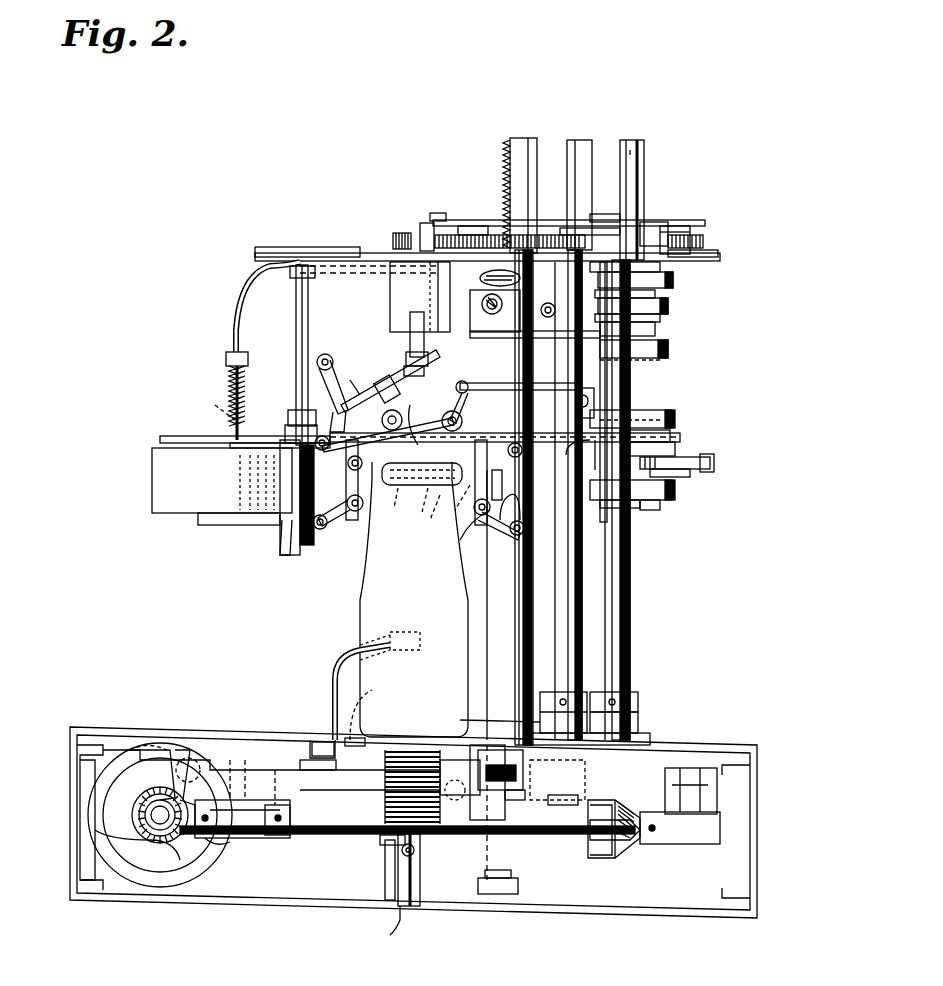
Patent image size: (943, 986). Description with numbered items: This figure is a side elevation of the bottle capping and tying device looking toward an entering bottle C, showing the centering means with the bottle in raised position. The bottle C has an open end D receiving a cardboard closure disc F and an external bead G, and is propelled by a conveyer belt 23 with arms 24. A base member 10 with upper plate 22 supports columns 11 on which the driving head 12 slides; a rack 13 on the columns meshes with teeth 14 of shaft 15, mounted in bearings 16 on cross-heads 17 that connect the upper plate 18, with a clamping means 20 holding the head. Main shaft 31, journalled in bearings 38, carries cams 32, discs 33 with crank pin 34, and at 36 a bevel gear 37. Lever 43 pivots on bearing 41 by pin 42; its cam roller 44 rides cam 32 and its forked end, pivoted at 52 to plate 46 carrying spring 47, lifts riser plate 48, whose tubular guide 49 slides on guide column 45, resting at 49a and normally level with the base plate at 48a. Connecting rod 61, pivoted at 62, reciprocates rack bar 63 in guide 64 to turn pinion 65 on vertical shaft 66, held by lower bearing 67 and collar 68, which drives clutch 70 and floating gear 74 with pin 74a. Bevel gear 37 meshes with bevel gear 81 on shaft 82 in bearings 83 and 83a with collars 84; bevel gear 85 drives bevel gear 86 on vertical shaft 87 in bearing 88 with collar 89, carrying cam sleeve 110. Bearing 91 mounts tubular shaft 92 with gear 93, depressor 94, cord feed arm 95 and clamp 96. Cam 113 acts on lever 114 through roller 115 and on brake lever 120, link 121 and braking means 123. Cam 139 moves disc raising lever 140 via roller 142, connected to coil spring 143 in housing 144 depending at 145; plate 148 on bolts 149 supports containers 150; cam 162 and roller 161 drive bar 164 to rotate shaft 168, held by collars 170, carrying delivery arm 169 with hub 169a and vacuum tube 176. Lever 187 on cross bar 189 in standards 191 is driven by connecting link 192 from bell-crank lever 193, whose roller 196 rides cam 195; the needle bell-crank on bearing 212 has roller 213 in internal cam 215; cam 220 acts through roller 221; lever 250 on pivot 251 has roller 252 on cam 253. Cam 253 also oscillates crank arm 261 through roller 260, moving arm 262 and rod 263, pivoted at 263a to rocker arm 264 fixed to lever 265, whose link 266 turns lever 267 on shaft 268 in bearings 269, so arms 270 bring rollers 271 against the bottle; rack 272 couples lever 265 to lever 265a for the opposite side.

The base member 10 is at (757, 797).
The column 11 is at (534, 584).
The driving head mechanism 12 is at (704, 216).
The rack 13 is at (510, 156).
The teeth 14 is at (484, 324).
The shaft 15 is at (482, 304).
The bearing 16 is at (486, 280).
The cross-head 17 is at (488, 340).
The upper plate 18 is at (348, 253).
The locking or clamping means 20 is at (549, 303).
The upper plate 22 is at (250, 730).
The conveyer belt 23 is at (316, 742).
The arm 24 is at (340, 648).
The rotatable shaft 31 is at (155, 830).
The cam 32 is at (108, 812).
The disc 33 is at (108, 858).
The crank pin 34 is at (195, 740).
The mounting of bevel gear 36 is at (118, 856).
The bevel gear 37 is at (165, 840).
The bearing 38 is at (140, 750).
The bearing 41 is at (300, 760).
The pin 42 is at (248, 838).
The lever 43 is at (310, 834).
The cam roller 44 is at (215, 848).
The guide column 45 is at (386, 882).
The plate 46 is at (424, 845).
The compression spring 47 is at (380, 806).
The riser plate 48 is at (362, 726).
The level position of riser plate 48a is at (355, 738).
The tubular guide 49 is at (420, 877).
The resting position of guide 49a is at (390, 932).
The pivot 52 is at (418, 858).
The connecting rod 61 is at (295, 790).
The pivot 62 is at (445, 790).
The rack bar 63 is at (486, 790).
The guide 64 is at (522, 800).
The pinion 65 is at (578, 805).
The vertical shaft 66 is at (582, 598).
The lower bearing 67 is at (460, 720).
The collar 68 is at (548, 692).
The disc clutch 70 is at (640, 222).
The floating gear 74 is at (460, 235).
The pin 74a is at (488, 226).
The bevel gear 81 is at (175, 845).
The shaft 82 is at (490, 834).
The bearing 83 is at (245, 838).
The bearing 83a is at (680, 846).
The collar 84 is at (280, 838).
The bevel gear 85 is at (625, 846).
The bevel gear 86 is at (598, 838).
The vertical shaft 87 is at (632, 612).
The bearing 88 is at (638, 720).
The collar 89 is at (638, 700).
The anti-friction bearing 91 is at (390, 295).
The tubular shaft 92 is at (416, 340).
The gear 93 is at (393, 238).
The closure depressor 94 is at (378, 380).
The cord feed arm 95 is at (410, 356).
The clamp 96 is at (410, 370).
The cam sleeve 110 is at (645, 382).
The cam 113 is at (680, 240).
The lever 114 is at (590, 232).
The roller 115 is at (605, 222).
The brake lever 120 is at (670, 226).
The link 121 is at (462, 220).
The braking means 123 is at (420, 235).
The cam 139 is at (668, 308).
The disc raising lever 140 is at (660, 320).
The cam roller bearing 142 is at (655, 295).
The coil spring 143 is at (228, 376).
The tubular housing 144 is at (360, 252).
The downward extension of housing 145 is at (236, 308).
The plate 148 is at (215, 525).
The bolt 149 is at (236, 404).
The container 150 is at (152, 470).
The cam roller bearing 161 is at (660, 268).
The cam 162 is at (673, 282).
The bar 164 is at (310, 247).
The shaft 168 is at (296, 312).
The paper disc delivery arm 169 is at (160, 436).
The hub portion 169a is at (296, 540).
The collar 170 is at (292, 278).
The vacuum tube 176 is at (285, 430).
The lever 187 is at (330, 380).
The cross bar 189 is at (318, 358).
The standard 191 is at (326, 386).
The connecting link 192 is at (356, 372).
The bell-crank lever 193 is at (655, 332).
The cam 195 is at (668, 350).
The roller bearing 196 is at (660, 365).
The bearing 212 is at (660, 510).
The roller bearing 213 is at (660, 508).
The internal cam 215 is at (675, 490).
The cam 220 is at (672, 415).
The roller bearing 221 is at (675, 422).
The lever 250 is at (714, 464).
The pivot 251 is at (690, 476).
The roller bearing 252 is at (685, 455).
The cam 253 is at (690, 438).
The roller bearing 260 is at (588, 470).
The crank arm 261 is at (572, 480).
The oscillating arm 262 is at (594, 396).
The rod 263 is at (500, 382).
The pivot 263a is at (478, 370).
The rocker arm 264 is at (436, 440).
The lever 265 is at (488, 460).
The lever 265a is at (360, 436).
The link 266 is at (522, 508).
The lever 267 is at (470, 535).
The shaft 268 is at (482, 520).
The bearing 269 is at (488, 482).
The arm 270 is at (448, 505).
The roller 271 is at (455, 480).
The rack 272 is at (412, 443).
The bottle C is at (414, 599).
The open end D is at (422, 507).
The spout E' is at (417, 484).
The cardboard closure disc F is at (401, 503).
The external circumferential bead G is at (424, 531).